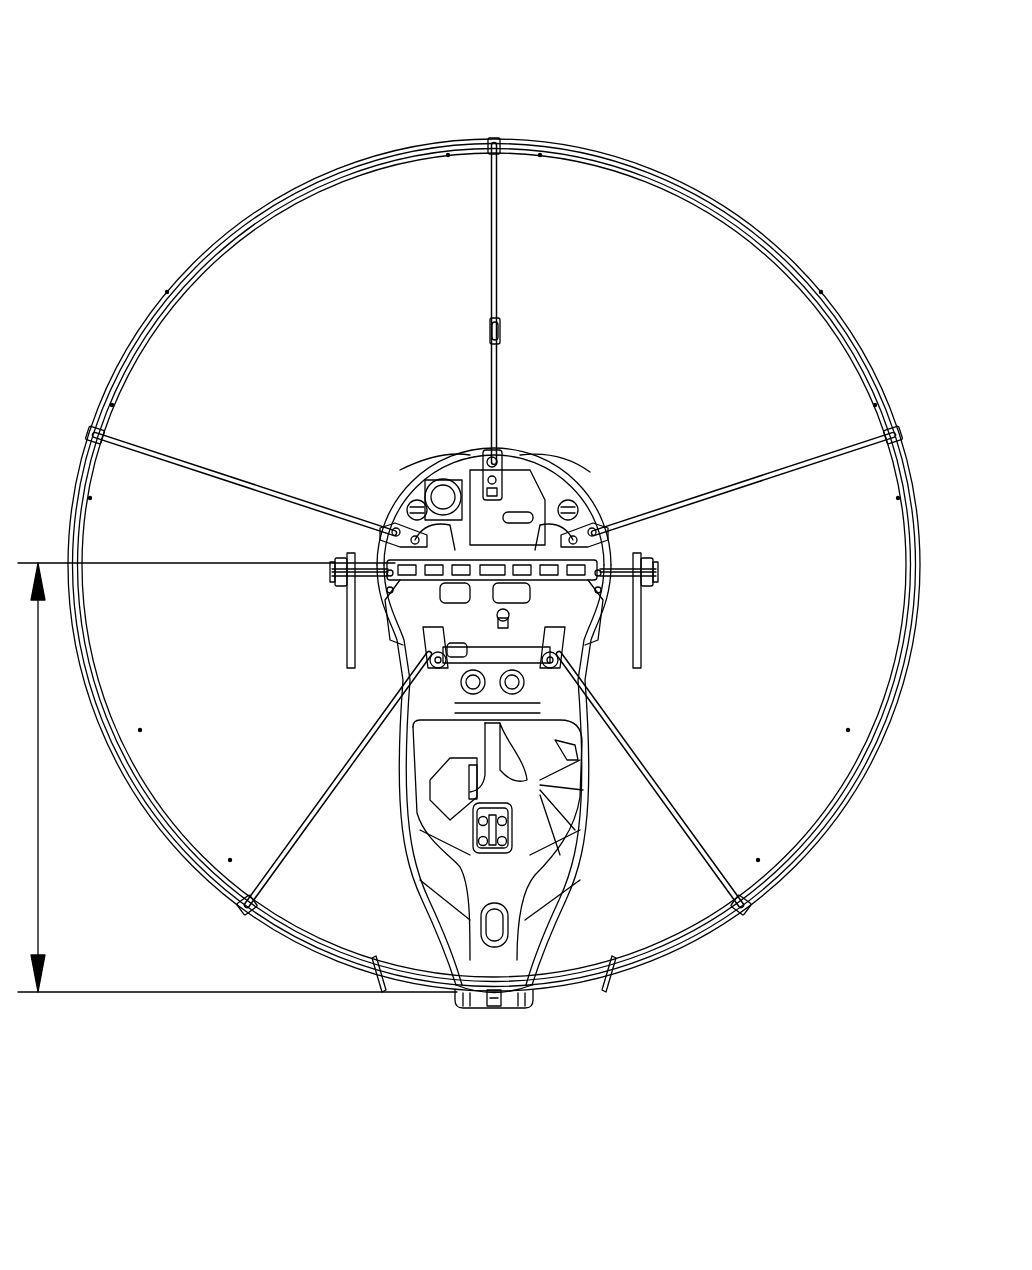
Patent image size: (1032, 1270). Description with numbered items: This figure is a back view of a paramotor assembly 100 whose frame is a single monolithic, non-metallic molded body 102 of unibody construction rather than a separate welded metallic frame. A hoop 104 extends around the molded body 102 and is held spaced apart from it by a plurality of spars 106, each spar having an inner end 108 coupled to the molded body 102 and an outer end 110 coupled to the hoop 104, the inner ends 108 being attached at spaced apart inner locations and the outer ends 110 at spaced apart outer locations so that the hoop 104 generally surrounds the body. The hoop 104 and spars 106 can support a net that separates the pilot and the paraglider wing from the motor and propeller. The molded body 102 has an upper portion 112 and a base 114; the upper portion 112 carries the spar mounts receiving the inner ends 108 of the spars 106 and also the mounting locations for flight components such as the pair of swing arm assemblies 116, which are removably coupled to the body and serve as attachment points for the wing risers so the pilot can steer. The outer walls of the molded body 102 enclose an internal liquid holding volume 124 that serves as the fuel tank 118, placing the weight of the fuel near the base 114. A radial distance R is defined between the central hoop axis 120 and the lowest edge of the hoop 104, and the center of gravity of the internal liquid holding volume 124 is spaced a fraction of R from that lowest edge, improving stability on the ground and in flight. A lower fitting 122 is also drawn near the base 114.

The paramotor assembly 100 is at (286, 68).
The molded body 102 is at (437, 903).
The hoop 104 is at (510, 142).
The spars 106 is at (489, 280).
The inner end 108 is at (505, 450).
The outer end 110 is at (491, 138).
The upper portion 112 is at (478, 505).
The base 114 is at (498, 1000).
The swing arm assemblies 116 is at (348, 628).
The fuel tank 118 is at (572, 825).
The central hoop axis 120 is at (500, 565).
The foot bracket 122 is at (485, 995).
The internal liquid holding volume 124 is at (444, 798).
The radial distance R is at (38, 890).